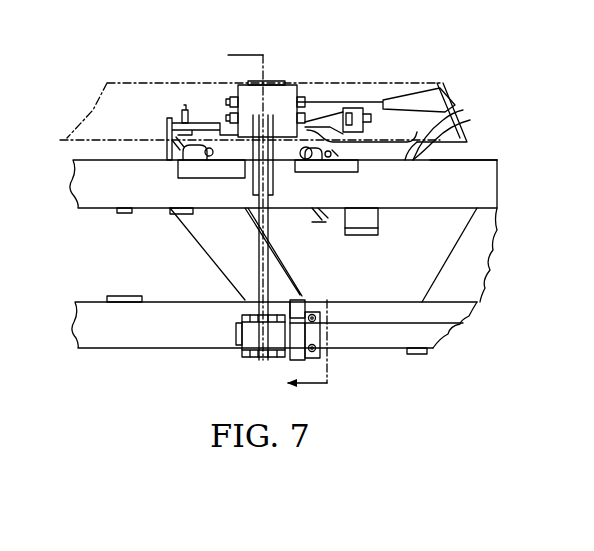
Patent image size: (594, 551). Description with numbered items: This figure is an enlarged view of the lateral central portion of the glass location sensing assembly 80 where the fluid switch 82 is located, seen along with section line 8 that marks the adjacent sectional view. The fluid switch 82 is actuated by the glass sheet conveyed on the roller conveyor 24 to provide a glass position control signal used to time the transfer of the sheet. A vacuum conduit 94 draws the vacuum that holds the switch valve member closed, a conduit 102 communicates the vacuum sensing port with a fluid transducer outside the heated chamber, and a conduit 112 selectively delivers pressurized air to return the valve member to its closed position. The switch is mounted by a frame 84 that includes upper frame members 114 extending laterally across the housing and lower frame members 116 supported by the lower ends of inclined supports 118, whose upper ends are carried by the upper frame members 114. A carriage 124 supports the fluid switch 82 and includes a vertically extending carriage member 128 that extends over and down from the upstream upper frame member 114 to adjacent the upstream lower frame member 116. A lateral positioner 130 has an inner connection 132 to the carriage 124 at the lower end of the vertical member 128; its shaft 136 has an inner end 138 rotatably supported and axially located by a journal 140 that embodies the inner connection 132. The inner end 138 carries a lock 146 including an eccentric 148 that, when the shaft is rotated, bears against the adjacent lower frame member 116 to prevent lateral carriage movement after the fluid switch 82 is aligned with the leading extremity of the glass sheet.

The glass location sensing assembly 80 is at (313, 202).
The roller conveyor 24 is at (140, 83).
The fluid switch 82 is at (230, 98).
The section line 8- 8 is at (262, 220).
The vacuum conduit 94 is at (360, 97).
The conduit 102 is at (395, 92).
The conduit 112 is at (442, 125).
The frame 84 is at (475, 157).
The upper frame members 114 is at (130, 180).
The carriage 124 is at (278, 223).
The inclined supports 118 is at (215, 253).
The lower frame members 116 is at (205, 298).
The vertically extending carriage member 128 is at (270, 231).
The lock 146 is at (303, 296).
The eccentric 148 is at (305, 310).
The inner end 138 is at (340, 332).
The shaft 136 is at (413, 323).
The journal 140 is at (242, 337).
The inner connection 132 is at (253, 364).
The lateral positioner 130 is at (312, 332).